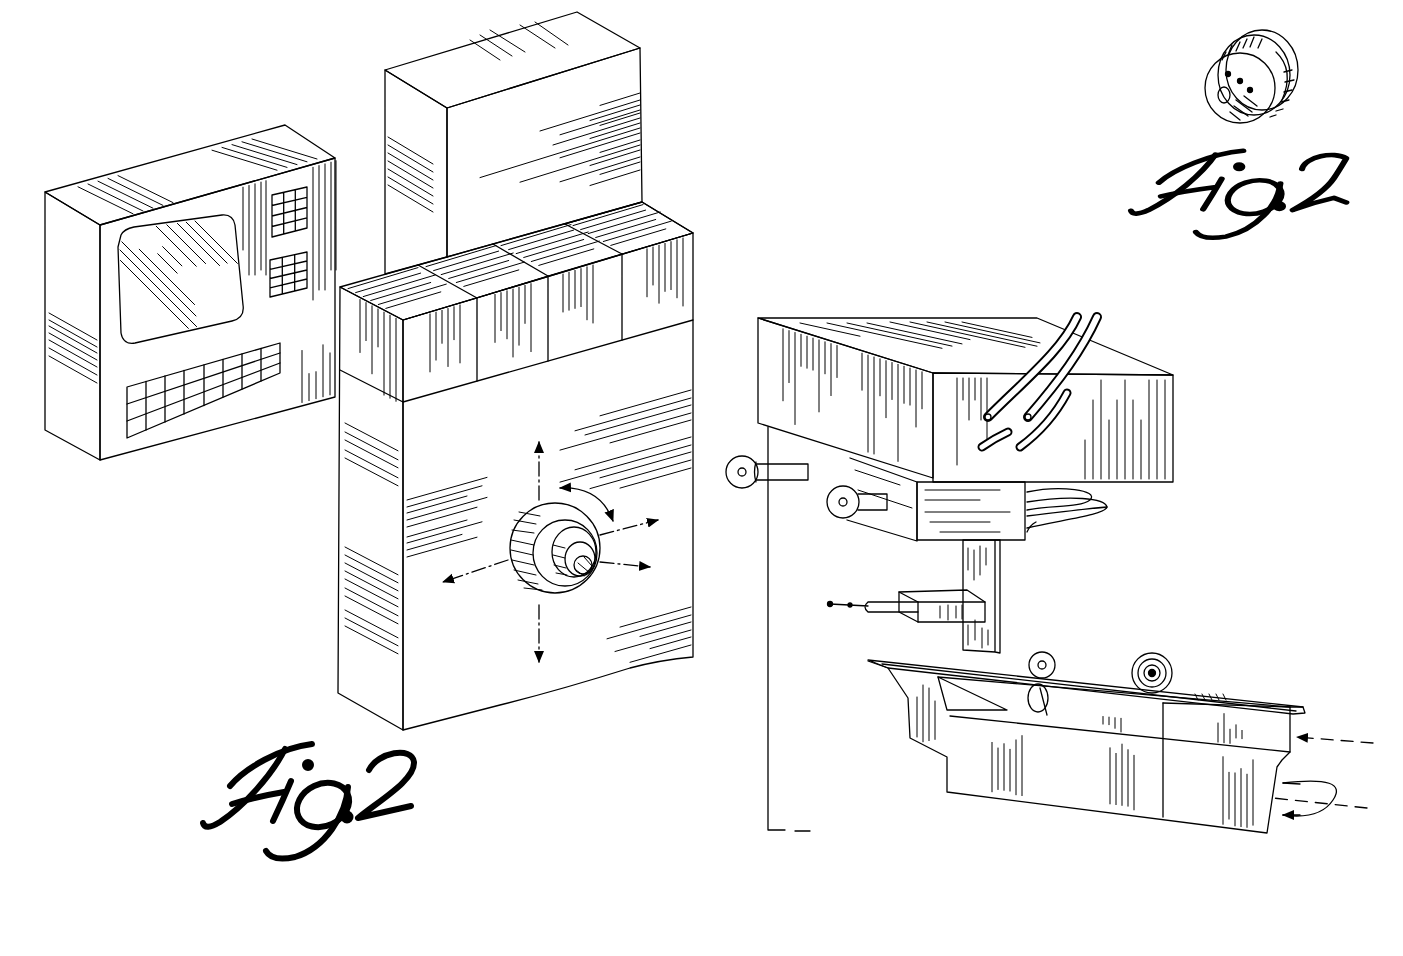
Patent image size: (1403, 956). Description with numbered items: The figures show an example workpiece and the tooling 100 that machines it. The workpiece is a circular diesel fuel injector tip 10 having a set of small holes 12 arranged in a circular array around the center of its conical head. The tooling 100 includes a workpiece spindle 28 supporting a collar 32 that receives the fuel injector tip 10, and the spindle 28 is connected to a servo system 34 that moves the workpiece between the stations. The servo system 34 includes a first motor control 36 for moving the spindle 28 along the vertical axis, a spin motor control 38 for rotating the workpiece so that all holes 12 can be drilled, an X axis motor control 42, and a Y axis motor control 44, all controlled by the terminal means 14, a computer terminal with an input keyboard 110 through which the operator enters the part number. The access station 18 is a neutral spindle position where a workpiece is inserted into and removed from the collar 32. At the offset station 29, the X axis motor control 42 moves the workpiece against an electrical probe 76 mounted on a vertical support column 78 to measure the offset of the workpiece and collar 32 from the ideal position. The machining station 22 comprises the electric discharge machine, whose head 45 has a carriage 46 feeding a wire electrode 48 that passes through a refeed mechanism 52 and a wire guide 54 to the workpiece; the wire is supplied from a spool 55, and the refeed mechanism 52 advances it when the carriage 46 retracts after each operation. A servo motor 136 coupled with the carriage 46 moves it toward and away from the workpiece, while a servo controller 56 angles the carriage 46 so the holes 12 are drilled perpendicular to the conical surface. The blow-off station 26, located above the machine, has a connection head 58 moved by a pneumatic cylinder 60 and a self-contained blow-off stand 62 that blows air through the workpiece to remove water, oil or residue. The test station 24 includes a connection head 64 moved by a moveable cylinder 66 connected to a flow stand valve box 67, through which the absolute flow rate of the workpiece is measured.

In FIG. 1, the fuel injector tip 10 is at (1300, 57).
In FIG. 2, the fuel injector tip 10 is at (567, 580).
In FIG. 1, the holes 12 is at (1216, 82).
In FIG. 1, the collar 32 is at (1300, 94).
In FIG. 2, the collar 32 is at (540, 550).
In FIG. 2, the terminal means 14 is at (185, 165).
In FIG. 2, the input keyboard 110 is at (177, 423).
In FIG. 2, the servo system 34 is at (707, 223).
In FIG. 2, the first motor control 36 is at (410, 278).
In FIG. 2, the X axis motor control 42 is at (475, 268).
In FIG. 2, the Y axis motor control 44 is at (550, 240).
In FIG. 2, the spin motor control 38 is at (650, 222).
In FIG. 2, the access station 18 is at (508, 597).
In FIG. 2, the workpiece spindle 28 is at (532, 512).
In FIG. 2, the tooling 100 is at (788, 288).
In FIG. 2, the connection head 64 is at (742, 456).
In FIG. 2, the moveable cylinder 66 is at (787, 463).
In FIG. 2, the flow stand valve box 67 is at (818, 478).
In FIG. 2, the test station 24 is at (747, 497).
In FIG. 2, the blow-off station 26 is at (817, 517).
In FIG. 2, the connection head 58 is at (842, 520).
In FIG. 2, the pneumatic cylinder 60 is at (875, 517).
In FIG. 2, the blow-off stand 62 is at (1015, 535).
In FIG. 2, the vertical support column 78 is at (985, 607).
In FIG. 2, the electrical probe 76 is at (857, 607).
In FIG. 2, the offset station 29 is at (820, 615).
In FIG. 2, the machining station 22 is at (893, 730).
In FIG. 2, the wire electrode 48 is at (872, 663).
In FIG. 2, the wire guide 54 is at (1010, 667).
In FIG. 2, the refeed mechanism 52 is at (1053, 660).
In FIG. 2, the head 45 is at (1063, 640).
In FIG. 2, the carriage 46 is at (1120, 680).
In FIG. 2, the spool 55 is at (1168, 665).
In FIG. 2, the servo motor 136 is at (1248, 703).
In FIG. 2, the servo controller 56 is at (1193, 803).